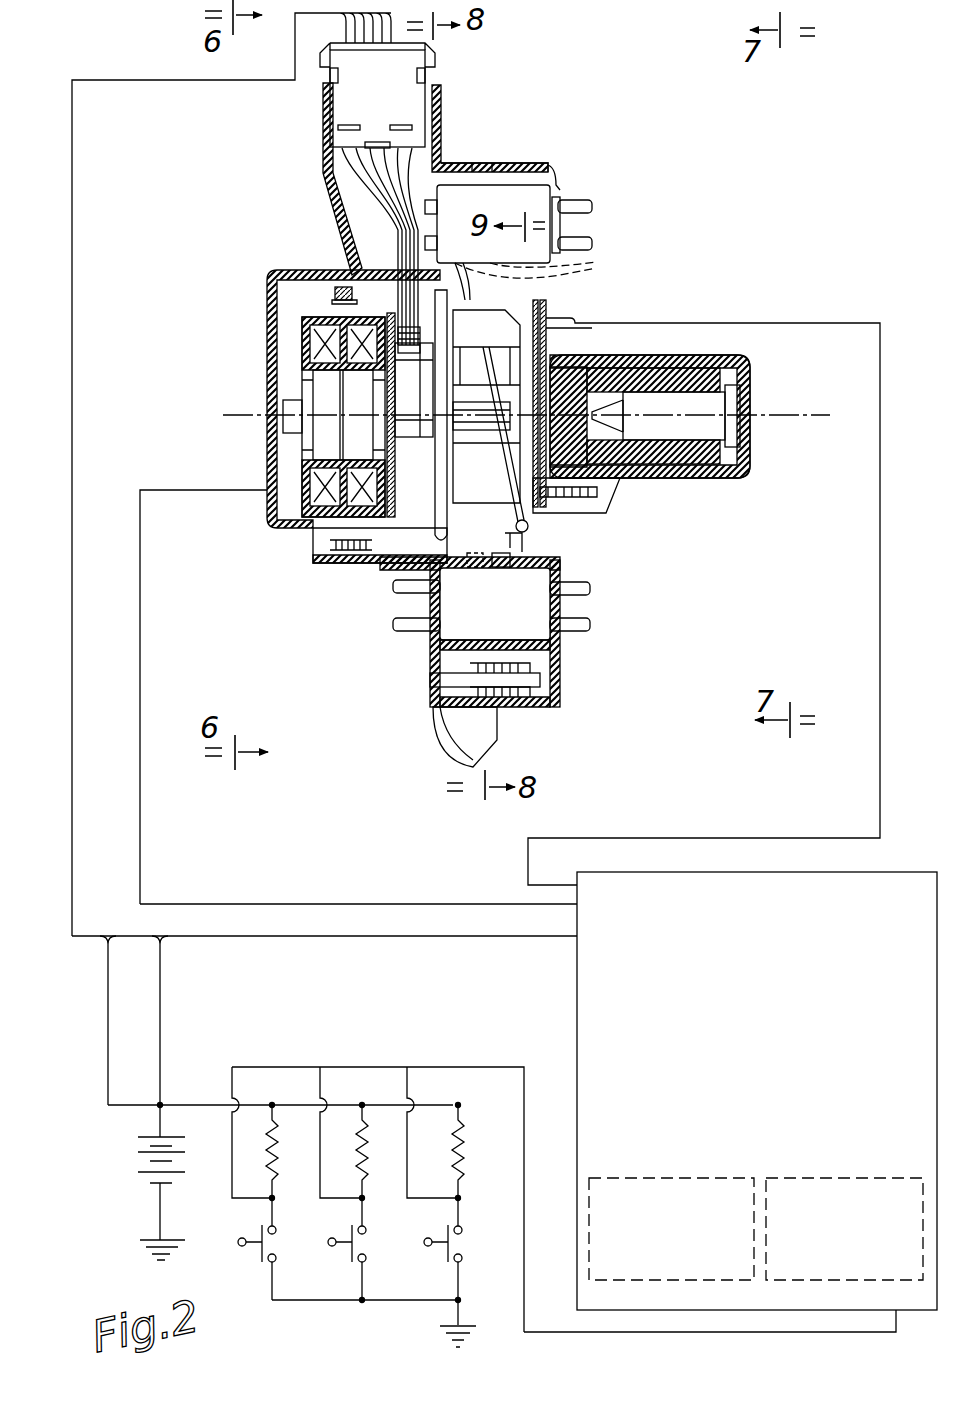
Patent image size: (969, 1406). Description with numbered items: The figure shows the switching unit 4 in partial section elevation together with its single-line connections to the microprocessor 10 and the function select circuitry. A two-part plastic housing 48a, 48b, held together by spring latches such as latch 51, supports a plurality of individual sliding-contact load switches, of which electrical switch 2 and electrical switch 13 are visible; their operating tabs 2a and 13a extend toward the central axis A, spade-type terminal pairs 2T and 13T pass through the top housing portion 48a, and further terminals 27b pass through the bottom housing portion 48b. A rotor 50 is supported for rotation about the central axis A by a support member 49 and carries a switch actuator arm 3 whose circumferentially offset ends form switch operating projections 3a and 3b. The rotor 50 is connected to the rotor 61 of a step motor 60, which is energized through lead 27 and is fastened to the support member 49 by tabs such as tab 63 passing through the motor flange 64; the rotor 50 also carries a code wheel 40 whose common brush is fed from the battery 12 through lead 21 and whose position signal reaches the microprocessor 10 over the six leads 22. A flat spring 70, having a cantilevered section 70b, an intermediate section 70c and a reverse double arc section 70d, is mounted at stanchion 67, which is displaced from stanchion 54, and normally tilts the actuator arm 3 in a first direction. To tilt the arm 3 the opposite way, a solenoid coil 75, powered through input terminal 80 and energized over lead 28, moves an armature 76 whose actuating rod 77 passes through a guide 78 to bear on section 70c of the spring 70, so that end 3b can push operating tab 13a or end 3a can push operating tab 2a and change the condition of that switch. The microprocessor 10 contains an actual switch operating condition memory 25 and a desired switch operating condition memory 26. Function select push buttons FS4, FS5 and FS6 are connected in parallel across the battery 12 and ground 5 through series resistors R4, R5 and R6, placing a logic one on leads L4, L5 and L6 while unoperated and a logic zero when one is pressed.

The electrical switch 2 is at (445, 645).
The operating tab 2a is at (475, 567).
The terminal pair 2T is at (585, 635).
The switch actuator arm 3 is at (514, 528).
The switch operating projection 3a is at (500, 567).
The switch operating projection 3b is at (455, 250).
The switching unit 4 is at (678, 505).
The point of reference or ground potential 5 is at (145, 1250).
The microprocessor 10 is at (575, 985).
The battery 12 is at (130, 1140).
The electrical switch 13 is at (510, 185).
The operating tab 13a is at (545, 265).
The terminal pair 13T is at (580, 200).
The lead 21 is at (108, 962).
The leads 22 is at (140, 935).
The actual switch operating condition memory device 25 is at (640, 1182).
The desired switch operating condition memory device 26 is at (828, 1180).
The lead 27 is at (140, 640).
The terminals 27b is at (400, 628).
The lead 28 is at (880, 585).
The code wheel 40 is at (435, 485).
The top housing portion 48a is at (490, 163).
The bottom housing portion 48b is at (270, 275).
The support member 49 is at (385, 448).
The rotor 50 is at (442, 518).
The spring latch 51 is at (525, 681).
The stanchion 54 is at (490, 445).
The step motor 60 is at (320, 330).
The rotor of step motor 61 is at (325, 385).
The tab 63 is at (400, 300).
The motor flange 64 is at (345, 300).
The stanchion 67 is at (470, 325).
The spring 70 is at (540, 560).
The flat cantilevered section 70b is at (548, 345).
The intermediate section 70c is at (515, 486).
The second reverse double arc section 70d is at (520, 545).
The solenoid coil 75 is at (680, 478).
The armature 76 is at (660, 400).
The actuating rod 77 is at (602, 368).
The guide 78 is at (598, 505).
The input terminal 80 is at (595, 322).
The central axis A is at (773, 410).
The series resistor R4 is at (266, 1150).
The series resistor R5 is at (358, 1130).
The series resistor R6 is at (463, 1165).
The lead L4 is at (232, 1200).
The lead L5 is at (320, 1200).
The lead L6 is at (412, 1200).
The function select switch FS4 is at (262, 1255).
The function select switch FS5 is at (348, 1247).
The function select switch FS6 is at (465, 1248).